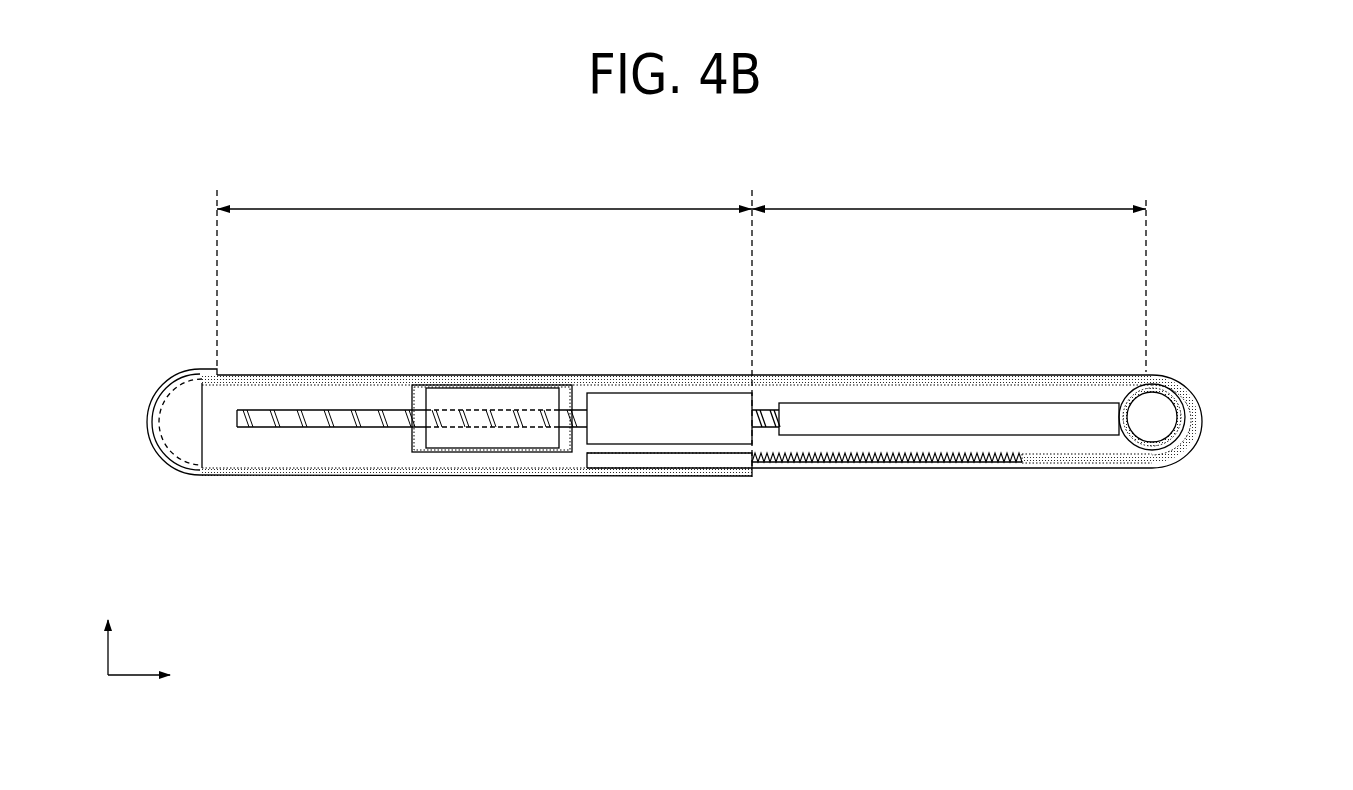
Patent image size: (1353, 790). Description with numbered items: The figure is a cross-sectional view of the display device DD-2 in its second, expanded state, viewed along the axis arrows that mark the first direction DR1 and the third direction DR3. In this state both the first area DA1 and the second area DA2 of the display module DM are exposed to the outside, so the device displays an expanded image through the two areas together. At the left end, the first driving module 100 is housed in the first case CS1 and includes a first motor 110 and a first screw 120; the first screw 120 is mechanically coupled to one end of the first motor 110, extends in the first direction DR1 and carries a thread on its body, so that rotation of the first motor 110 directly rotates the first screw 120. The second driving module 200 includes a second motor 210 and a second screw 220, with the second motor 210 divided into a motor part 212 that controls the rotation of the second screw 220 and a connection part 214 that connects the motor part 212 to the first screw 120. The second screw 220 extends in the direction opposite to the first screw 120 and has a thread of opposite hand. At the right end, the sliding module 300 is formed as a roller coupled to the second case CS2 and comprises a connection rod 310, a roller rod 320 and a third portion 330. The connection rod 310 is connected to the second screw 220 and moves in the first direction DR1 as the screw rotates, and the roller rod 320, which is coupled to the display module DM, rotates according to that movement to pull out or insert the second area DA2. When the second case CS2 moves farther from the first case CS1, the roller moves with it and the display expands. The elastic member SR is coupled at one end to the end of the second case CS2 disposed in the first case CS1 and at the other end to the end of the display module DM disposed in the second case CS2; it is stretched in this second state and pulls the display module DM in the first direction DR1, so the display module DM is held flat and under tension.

The first driving module 100 is at (303, 540).
The first motor 110 is at (624, 433).
The first screw 120 is at (318, 420).
The second driving module 200 is at (440, 270).
The second motor 210 is at (398, 313).
The motor part 212 is at (497, 400).
The connection part 214 is at (419, 402).
The second screw 220 is at (752, 420).
The sliding module 300 is at (1284, 372).
The connection rod 310 is at (1115, 418).
The roller rod 320 is at (1157, 386).
The third portion 330 is at (1162, 437).
The display module DM is at (838, 377).
The elastic member SR is at (840, 463).
The first case CS1 is at (183, 475).
The second case CS2 is at (1140, 469).
The first area DA1 is at (484, 327).
The second area DA2 is at (949, 278).
The display device DD-2 is at (1238, 232).
The first direction DR1 is at (163, 678).
The third direction DR3 is at (108, 630).